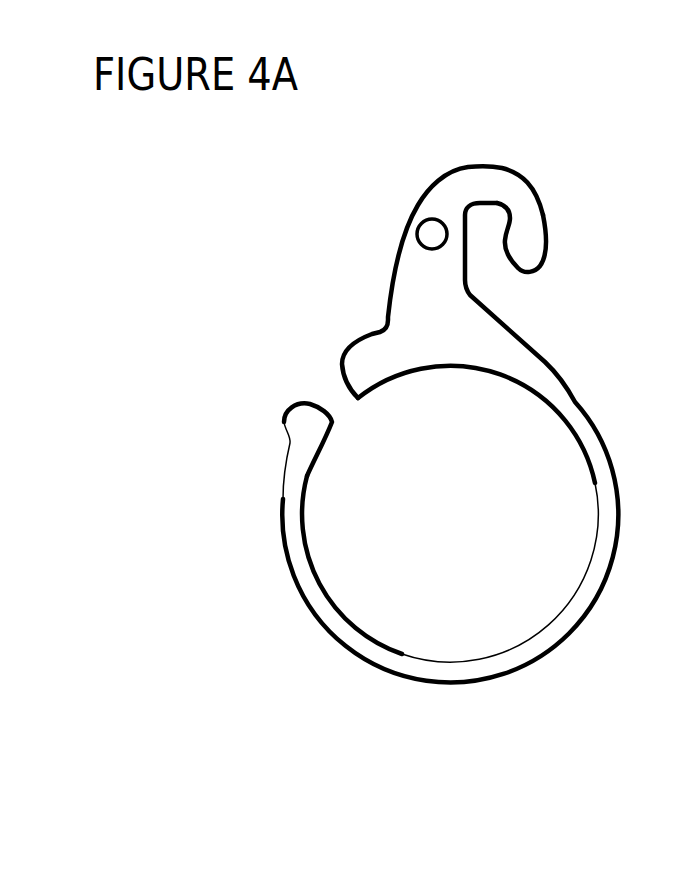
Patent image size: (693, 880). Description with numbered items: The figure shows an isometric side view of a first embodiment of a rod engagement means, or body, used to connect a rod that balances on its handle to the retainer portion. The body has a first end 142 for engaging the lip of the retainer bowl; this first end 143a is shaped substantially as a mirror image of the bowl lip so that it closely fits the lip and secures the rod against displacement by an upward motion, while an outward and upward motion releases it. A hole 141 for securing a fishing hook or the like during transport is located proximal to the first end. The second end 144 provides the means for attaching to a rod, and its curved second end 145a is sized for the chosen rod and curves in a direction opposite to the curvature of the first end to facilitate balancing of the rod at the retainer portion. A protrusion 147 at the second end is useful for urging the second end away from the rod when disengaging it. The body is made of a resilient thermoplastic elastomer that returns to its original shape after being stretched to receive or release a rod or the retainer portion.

The first end 142 is at (547, 157).
The hole 141 is at (425, 233).
The first end 143a is at (525, 245).
The second end 144 is at (502, 712).
The curved second end 145a is at (413, 663).
The protrusion 147 is at (302, 423).